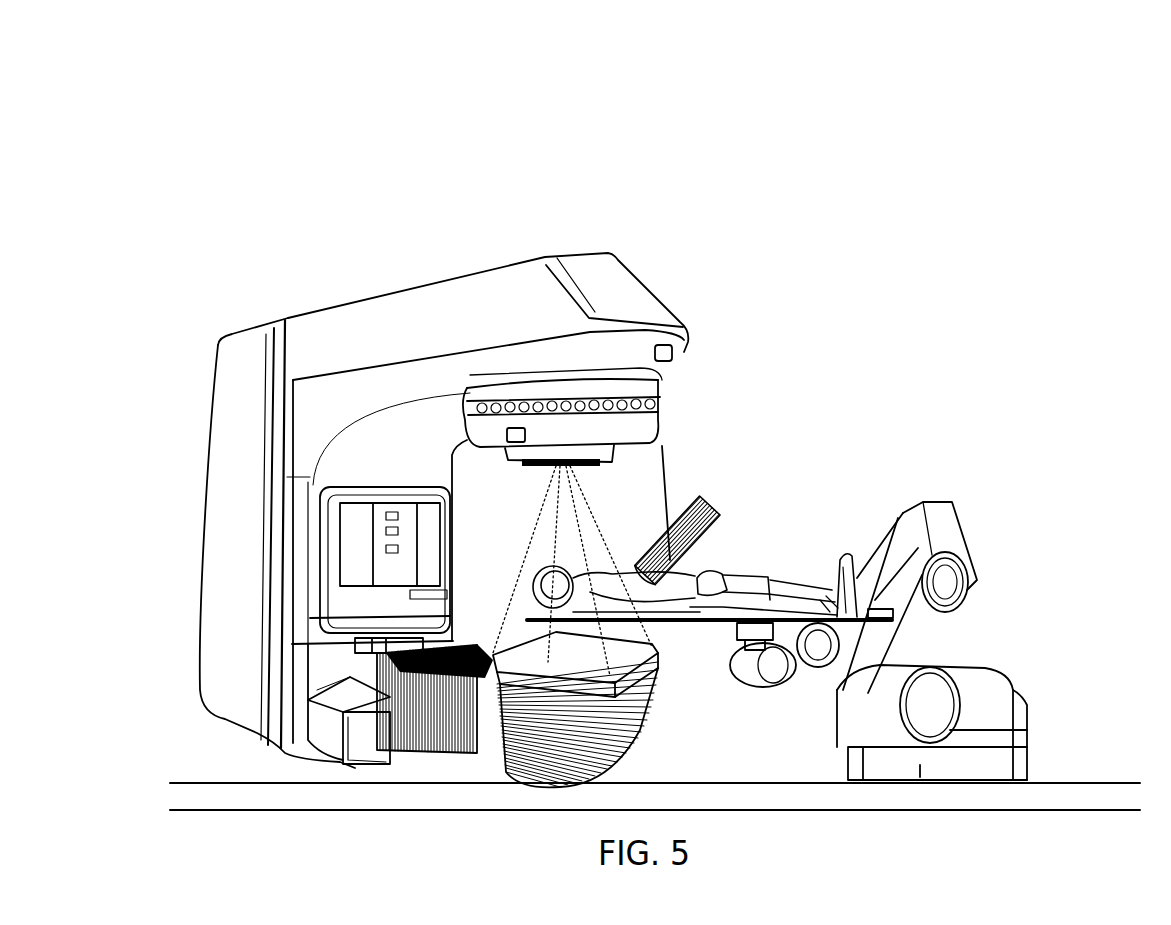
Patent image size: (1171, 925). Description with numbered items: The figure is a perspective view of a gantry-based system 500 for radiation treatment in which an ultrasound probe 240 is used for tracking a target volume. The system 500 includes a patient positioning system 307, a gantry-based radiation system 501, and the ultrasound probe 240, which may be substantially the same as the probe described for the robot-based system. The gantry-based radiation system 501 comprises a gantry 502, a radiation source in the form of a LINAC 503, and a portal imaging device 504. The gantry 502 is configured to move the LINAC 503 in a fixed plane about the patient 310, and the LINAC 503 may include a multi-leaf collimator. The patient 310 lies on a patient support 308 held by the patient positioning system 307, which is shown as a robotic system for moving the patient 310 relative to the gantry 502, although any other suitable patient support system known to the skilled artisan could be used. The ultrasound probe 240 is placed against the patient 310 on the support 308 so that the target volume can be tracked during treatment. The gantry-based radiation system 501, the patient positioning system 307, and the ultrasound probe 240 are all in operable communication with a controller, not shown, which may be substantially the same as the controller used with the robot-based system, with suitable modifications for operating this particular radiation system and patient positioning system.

The gantry-based system 500 is at (618, 46).
The gantry-based radiation system 501 is at (390, 160).
The gantry 502 is at (437, 282).
The radiation source (LINAC) 503 is at (668, 406).
The portal imaging device 504 is at (665, 660).
The ultrasound probe 240 is at (706, 512).
The patient 310 is at (543, 552).
The patient support table 308 is at (530, 618).
The patient positioning system 307 is at (1000, 529).